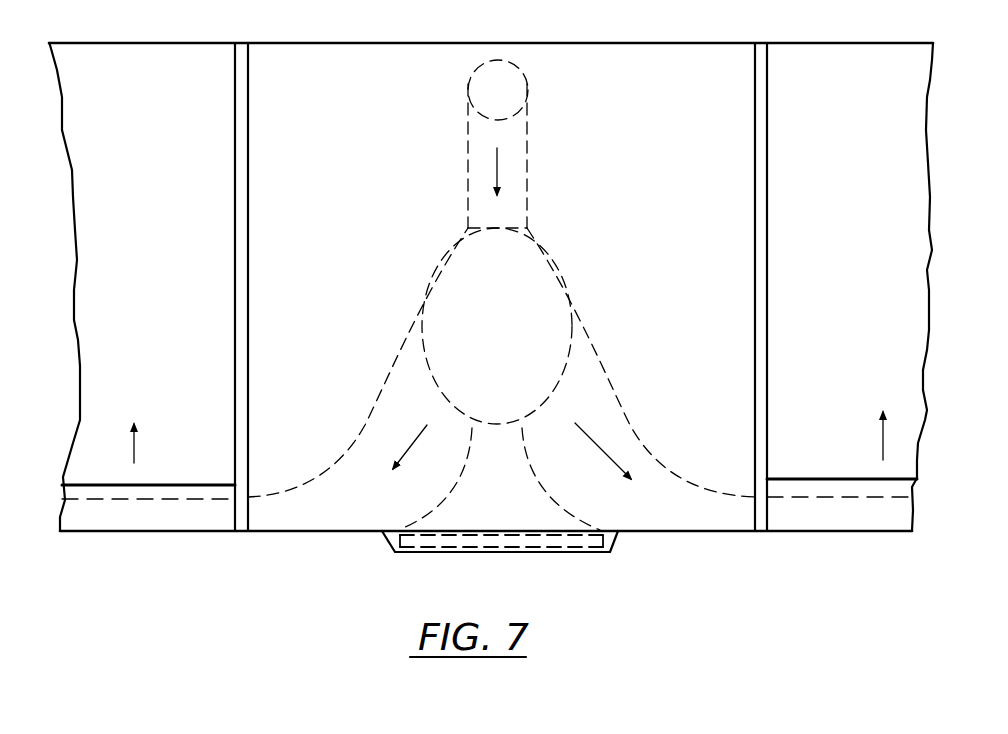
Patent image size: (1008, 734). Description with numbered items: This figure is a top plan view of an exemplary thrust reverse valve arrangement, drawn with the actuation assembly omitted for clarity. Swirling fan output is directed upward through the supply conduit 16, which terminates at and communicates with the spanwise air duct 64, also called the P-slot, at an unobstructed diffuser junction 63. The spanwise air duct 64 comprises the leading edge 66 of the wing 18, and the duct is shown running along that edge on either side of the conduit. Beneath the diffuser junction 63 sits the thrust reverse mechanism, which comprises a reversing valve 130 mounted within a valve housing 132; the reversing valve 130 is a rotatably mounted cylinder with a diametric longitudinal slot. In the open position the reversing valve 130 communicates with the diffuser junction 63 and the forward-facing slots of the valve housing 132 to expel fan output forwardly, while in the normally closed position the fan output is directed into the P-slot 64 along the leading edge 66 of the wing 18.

The supply conduit 16 is at (520, 76).
The wing 18 is at (721, 536).
The diffuser junction 63 is at (573, 266).
The spanwise air duct 64 is at (145, 515).
The leading edge 66 is at (218, 533).
The reversing valve 130 is at (589, 549).
The valve housing 132 is at (382, 545).